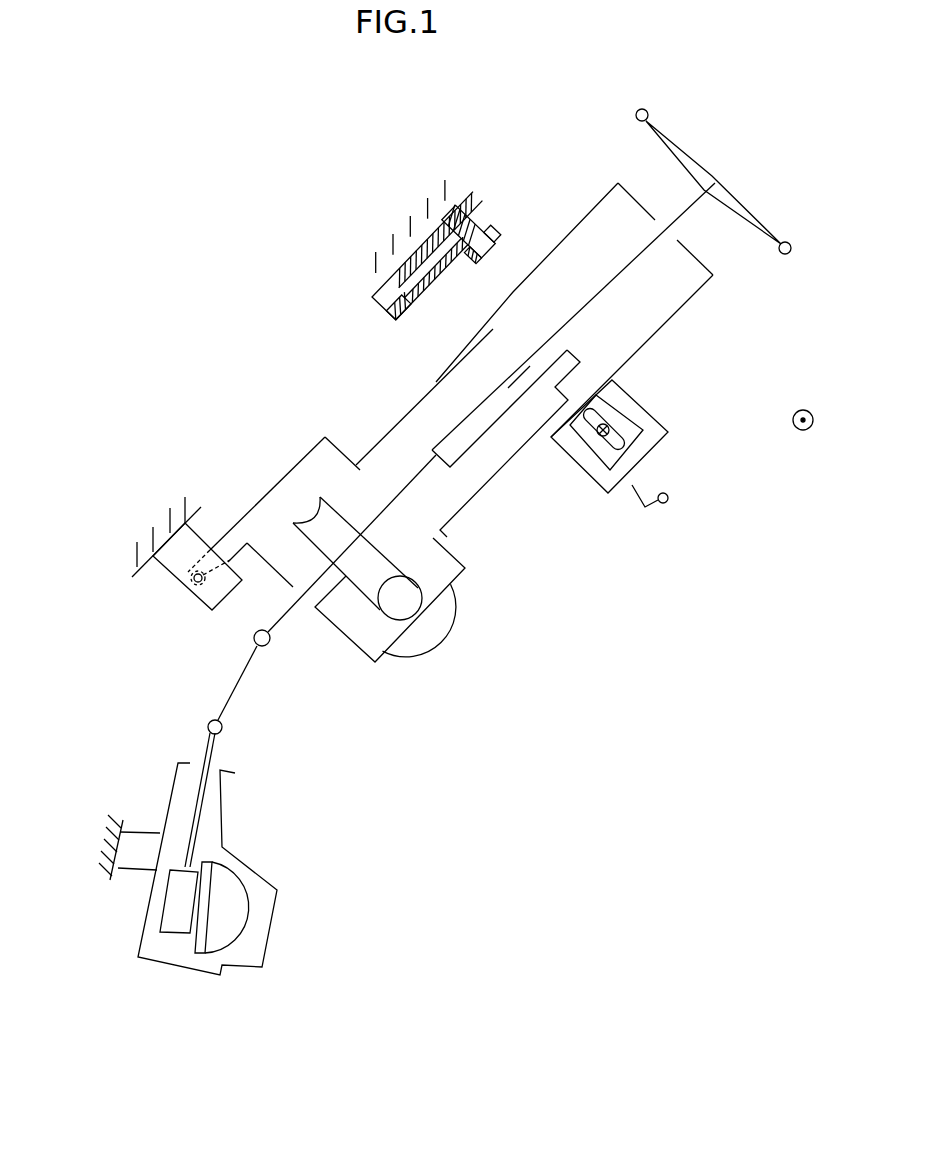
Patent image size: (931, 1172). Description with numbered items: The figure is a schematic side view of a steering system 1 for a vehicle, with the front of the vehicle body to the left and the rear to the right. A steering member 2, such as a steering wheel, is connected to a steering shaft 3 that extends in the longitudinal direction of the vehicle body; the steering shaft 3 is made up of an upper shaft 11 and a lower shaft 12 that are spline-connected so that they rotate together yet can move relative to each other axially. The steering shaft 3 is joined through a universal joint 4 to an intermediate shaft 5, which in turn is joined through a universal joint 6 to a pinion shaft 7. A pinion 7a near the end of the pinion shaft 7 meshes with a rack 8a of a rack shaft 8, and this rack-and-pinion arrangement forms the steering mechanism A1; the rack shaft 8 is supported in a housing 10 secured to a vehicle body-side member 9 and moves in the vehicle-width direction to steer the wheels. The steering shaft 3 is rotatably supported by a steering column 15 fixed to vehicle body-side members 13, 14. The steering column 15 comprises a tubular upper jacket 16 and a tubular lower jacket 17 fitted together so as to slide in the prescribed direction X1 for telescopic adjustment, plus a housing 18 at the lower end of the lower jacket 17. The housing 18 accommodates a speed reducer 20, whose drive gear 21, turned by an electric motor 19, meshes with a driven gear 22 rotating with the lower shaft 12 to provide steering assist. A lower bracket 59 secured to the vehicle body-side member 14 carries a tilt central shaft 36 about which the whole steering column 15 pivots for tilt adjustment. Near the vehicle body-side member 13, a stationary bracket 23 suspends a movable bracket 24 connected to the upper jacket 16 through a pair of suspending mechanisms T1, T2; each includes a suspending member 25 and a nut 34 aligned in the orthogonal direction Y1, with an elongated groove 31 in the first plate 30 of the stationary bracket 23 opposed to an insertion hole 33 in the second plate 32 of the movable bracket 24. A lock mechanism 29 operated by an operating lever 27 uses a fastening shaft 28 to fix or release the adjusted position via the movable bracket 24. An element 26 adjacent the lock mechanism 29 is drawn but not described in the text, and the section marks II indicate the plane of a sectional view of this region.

The steering system 1 is at (718, 148).
The steering member 2 is at (748, 200).
The steering shaft 3 is at (678, 208).
The universal joint 4 is at (254, 642).
The intermediate shaft 5 is at (243, 690).
The universal joint 6 is at (208, 727).
The pinion shaft 7 is at (214, 747).
The pinion 7a is at (172, 902).
The rack shaft 8 is at (252, 908).
The rack 8a is at (190, 935).
The vehicle body-side member 9 is at (112, 835).
The housing 10 is at (172, 790).
The upper shaft 11 is at (617, 283).
The lower shaft 12 is at (480, 435).
The vehicle body-side member 13 is at (352, 295).
The vehicle body-side member 14 is at (145, 550).
The steering column 15 is at (693, 297).
The upper jacket 16 is at (543, 453).
The lower jacket 17 is at (463, 517).
The housing 18 is at (270, 485).
The electric motor 19 is at (460, 633).
The speed reducer 20 is at (350, 518).
The drive gear 21 is at (410, 607).
The driven gear 22 is at (363, 570).
The stationary bracket 23 is at (373, 303).
The movable bracket 24 is at (438, 352).
The suspending member 25 is at (445, 222).
The slot 26 is at (635, 433).
The operating lever 27 is at (640, 490).
The fastening shaft 28 is at (608, 432).
The lock mechanism 29 is at (657, 520).
The first plate 30 is at (470, 230).
The elongated groove 31 is at (427, 283).
The second plate 32 is at (485, 257).
The insertion hole 33 is at (548, 248).
The nut 34 is at (440, 308).
The tilt central shaft 36 is at (190, 585).
The lower bracket 59 is at (180, 553).
The steering mechanism A1 is at (237, 955).
The prescribed direction X1 is at (560, 212).
The orthogonal direction Y1 is at (805, 431).
The suspending mechanism T1 is at (508, 163).
The suspending mechanism T2 is at (465, 217).
The section line II is at (374, 159).